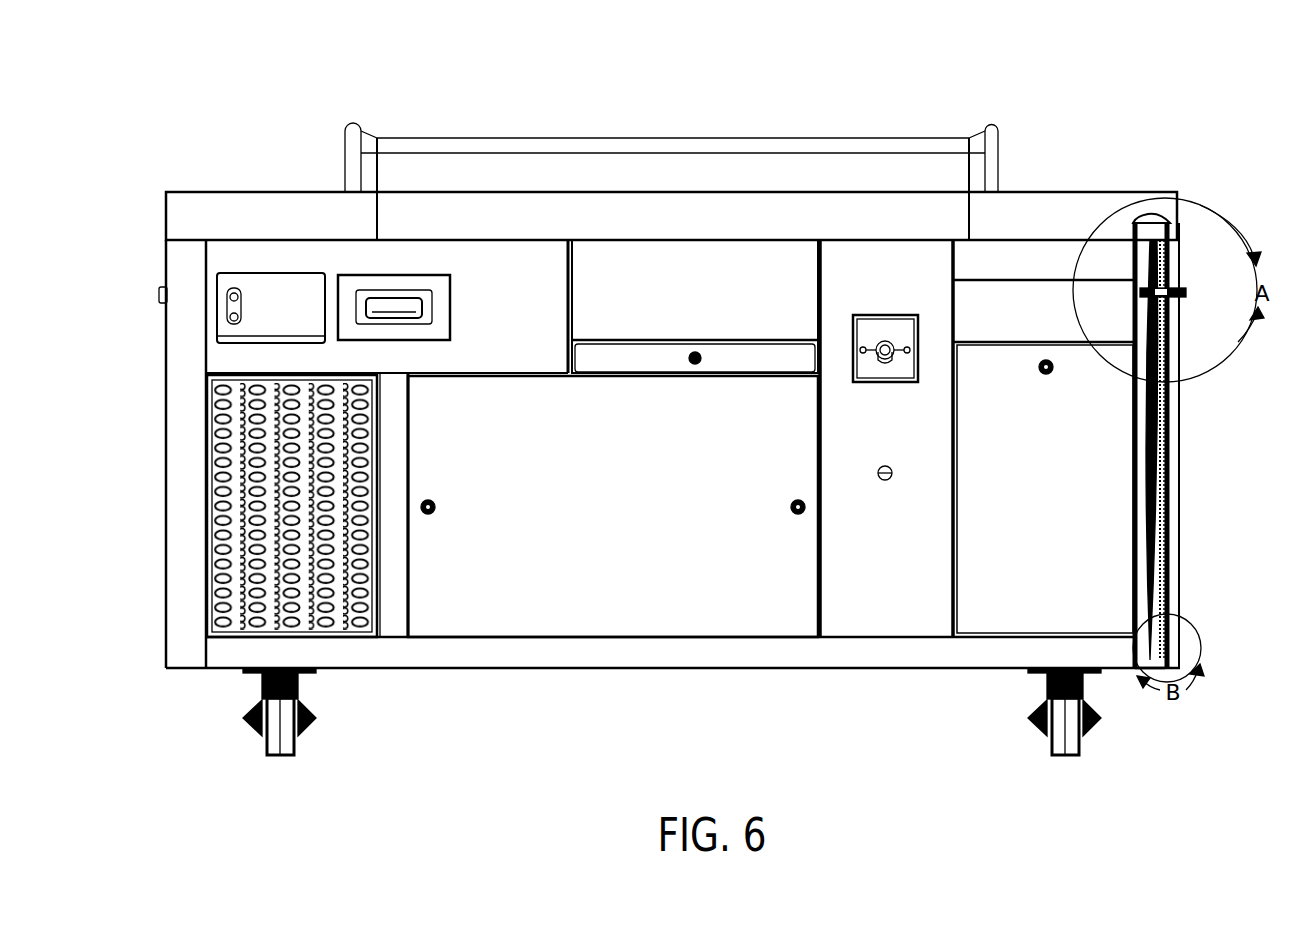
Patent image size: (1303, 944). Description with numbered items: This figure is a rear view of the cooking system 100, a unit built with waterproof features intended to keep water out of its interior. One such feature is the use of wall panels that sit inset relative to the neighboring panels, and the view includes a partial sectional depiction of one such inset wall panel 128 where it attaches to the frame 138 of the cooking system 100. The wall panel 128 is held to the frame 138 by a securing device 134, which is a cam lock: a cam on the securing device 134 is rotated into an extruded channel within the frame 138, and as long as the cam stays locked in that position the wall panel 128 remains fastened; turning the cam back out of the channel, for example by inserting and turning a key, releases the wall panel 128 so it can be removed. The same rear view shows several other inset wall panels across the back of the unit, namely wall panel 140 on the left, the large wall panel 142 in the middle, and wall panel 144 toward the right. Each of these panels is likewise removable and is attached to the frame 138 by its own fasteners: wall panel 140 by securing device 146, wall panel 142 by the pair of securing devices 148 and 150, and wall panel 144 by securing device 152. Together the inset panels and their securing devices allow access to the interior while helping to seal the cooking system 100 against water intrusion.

The cooking system 100 is at (1192, 66).
The wall panel 128 is at (1181, 505).
The securing device 134 is at (1186, 292).
The frame 138 is at (1168, 425).
The wall panel 140 is at (162, 388).
The wall panel 142 is at (608, 637).
The wall panel 144 is at (1018, 632).
The securing device 146 is at (159, 295).
The securing device 148 is at (437, 505).
The securing device 150 is at (789, 505).
The securing device 152 is at (1037, 372).